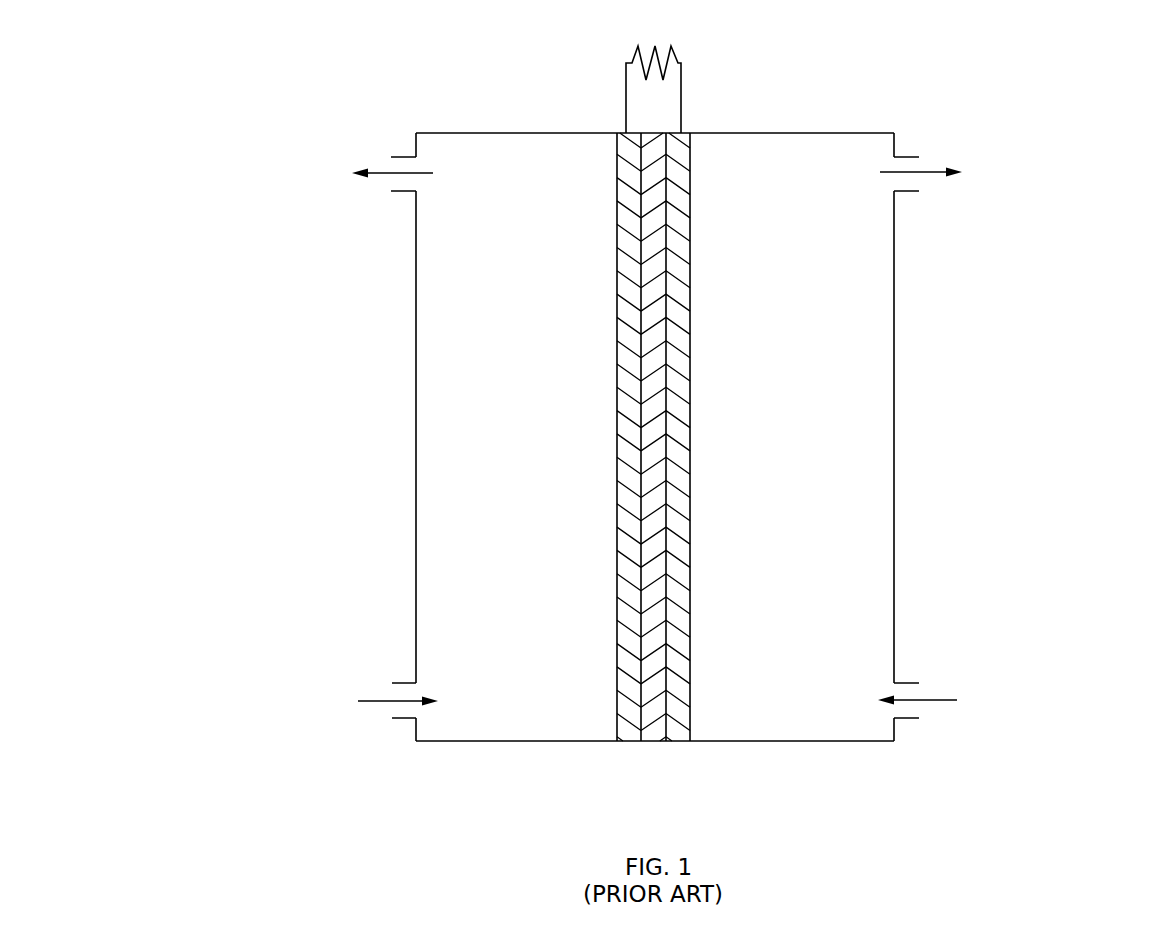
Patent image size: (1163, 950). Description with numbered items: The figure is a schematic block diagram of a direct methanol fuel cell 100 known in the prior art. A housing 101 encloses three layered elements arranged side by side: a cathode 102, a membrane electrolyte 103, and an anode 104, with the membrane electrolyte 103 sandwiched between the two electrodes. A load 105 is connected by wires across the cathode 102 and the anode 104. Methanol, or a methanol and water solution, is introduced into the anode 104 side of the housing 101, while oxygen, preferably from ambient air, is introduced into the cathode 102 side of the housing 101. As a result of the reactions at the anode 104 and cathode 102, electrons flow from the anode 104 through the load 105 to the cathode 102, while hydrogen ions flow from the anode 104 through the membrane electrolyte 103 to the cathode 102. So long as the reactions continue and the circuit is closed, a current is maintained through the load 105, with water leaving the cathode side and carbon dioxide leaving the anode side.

The direct methanol fuel cell 100 is at (238, 405).
The housing 101 is at (493, 741).
The cathode 102 is at (628, 741).
The membrane electrolyte 103 is at (652, 741).
The anode 104 is at (680, 741).
The load 105 is at (681, 62).